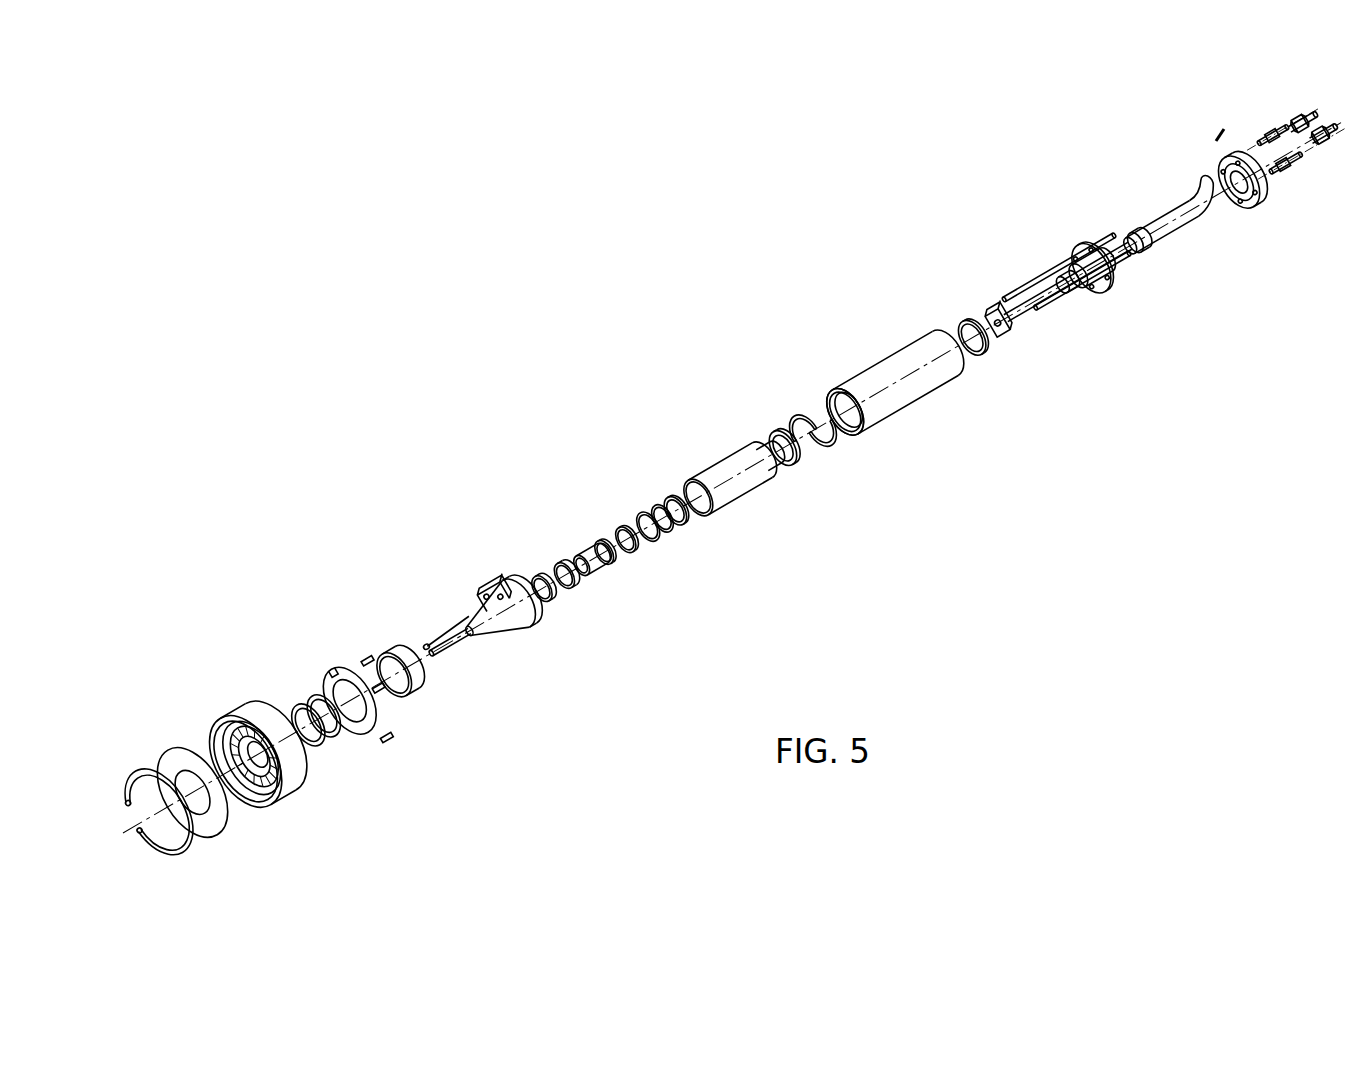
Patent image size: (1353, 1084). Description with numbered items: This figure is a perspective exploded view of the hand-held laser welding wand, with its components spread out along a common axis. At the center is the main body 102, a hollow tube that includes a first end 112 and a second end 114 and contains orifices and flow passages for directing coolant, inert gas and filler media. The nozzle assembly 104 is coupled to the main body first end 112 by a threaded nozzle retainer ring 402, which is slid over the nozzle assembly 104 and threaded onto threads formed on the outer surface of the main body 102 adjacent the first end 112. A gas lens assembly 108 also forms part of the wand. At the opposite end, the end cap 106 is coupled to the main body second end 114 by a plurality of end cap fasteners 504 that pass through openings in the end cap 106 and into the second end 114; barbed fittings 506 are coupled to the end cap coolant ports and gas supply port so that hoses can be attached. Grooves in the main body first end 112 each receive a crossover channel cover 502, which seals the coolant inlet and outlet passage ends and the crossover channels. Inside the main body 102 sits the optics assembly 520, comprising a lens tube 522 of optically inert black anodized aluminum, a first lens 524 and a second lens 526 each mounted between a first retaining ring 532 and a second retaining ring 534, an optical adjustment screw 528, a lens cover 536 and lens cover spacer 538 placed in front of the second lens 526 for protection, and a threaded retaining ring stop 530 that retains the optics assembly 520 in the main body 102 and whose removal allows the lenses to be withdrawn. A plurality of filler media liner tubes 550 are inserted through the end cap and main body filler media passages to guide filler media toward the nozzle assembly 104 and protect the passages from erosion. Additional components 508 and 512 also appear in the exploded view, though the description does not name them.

The main body 102 is at (893, 354).
The nozzle assembly 104 is at (454, 603).
The end cap 106 is at (1254, 206).
The gas lens assembly 108 is at (401, 733).
The first end 112 is at (829, 390).
The second end 114 is at (973, 360).
The nozzle retainer ring 402 is at (417, 698).
The crossover channel cover 502 is at (797, 410).
The end cap fasteners 504 is at (1318, 156).
The barbed fitting 506 is at (1349, 107).
The tube fitting 508 is at (1170, 208).
The block 512 is at (992, 310).
The optics assembly 520 is at (828, 515).
The lens tube 522 is at (736, 462).
The first lens 524 is at (651, 506).
The second lens 526 is at (602, 538).
The optical adjustment screw 528 is at (784, 470).
The retaining ring stop 530 is at (534, 574).
The first retaining ring 532 is at (571, 593).
The second retaining ring 534 is at (641, 557).
The lens cover 536 is at (572, 556).
The lens cover spacer 538 is at (605, 576).
The filler media liner tubes 550 is at (1104, 244).